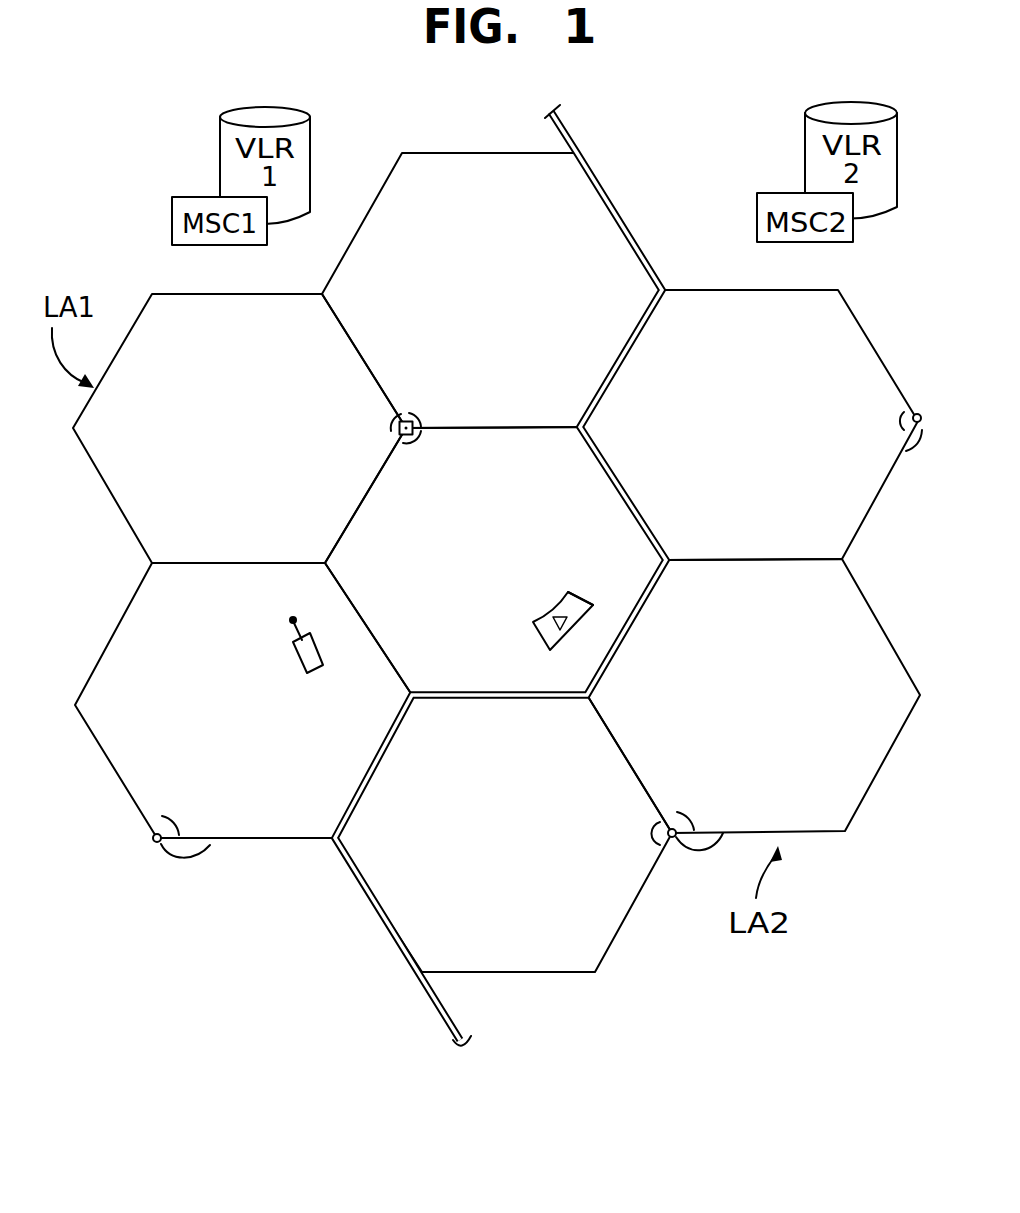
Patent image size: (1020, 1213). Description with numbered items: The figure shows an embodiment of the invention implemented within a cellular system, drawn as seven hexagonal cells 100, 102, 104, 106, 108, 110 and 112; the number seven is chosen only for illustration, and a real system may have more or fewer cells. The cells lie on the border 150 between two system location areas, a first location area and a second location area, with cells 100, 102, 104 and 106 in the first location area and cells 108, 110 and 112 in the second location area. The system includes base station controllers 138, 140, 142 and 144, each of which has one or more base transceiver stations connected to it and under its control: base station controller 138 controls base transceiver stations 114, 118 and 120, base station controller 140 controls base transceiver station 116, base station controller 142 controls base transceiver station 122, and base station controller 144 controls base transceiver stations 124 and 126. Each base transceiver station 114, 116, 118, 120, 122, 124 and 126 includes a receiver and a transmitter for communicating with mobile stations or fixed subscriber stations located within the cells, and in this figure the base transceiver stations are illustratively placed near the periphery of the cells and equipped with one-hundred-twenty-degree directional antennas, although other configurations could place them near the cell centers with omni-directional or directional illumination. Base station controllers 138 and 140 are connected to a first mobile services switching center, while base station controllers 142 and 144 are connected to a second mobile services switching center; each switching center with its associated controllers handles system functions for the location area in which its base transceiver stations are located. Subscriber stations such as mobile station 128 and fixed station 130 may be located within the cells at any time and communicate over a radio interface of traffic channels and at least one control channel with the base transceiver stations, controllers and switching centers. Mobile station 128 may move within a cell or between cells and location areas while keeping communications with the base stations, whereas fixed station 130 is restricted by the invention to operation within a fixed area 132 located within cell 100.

The cell 100 is at (467, 687).
The cell 102 is at (322, 828).
The cell 104 is at (235, 548).
The cell 106 is at (563, 405).
The cell 108 is at (738, 542).
The cell 110 is at (827, 822).
The cell 112 is at (468, 957).
The base transceiver station 114 is at (428, 437).
The base transceiver station 116 is at (163, 818).
The base transceiver station 118 is at (398, 436).
The base transceiver station 120 is at (416, 413).
The base transceiver station 122 is at (912, 418).
The base transceiver station 124 is at (679, 813).
The base transceiver station 126 is at (658, 835).
The mobile station 128 is at (297, 654).
The fixed station 130 is at (538, 639).
The fixed area 132 is at (568, 591).
The base station controller 138 is at (395, 428).
The base station controller 140 is at (210, 845).
The base station controller 142 is at (908, 445).
The base station controller 144 is at (725, 834).
The border 150 is at (603, 188).